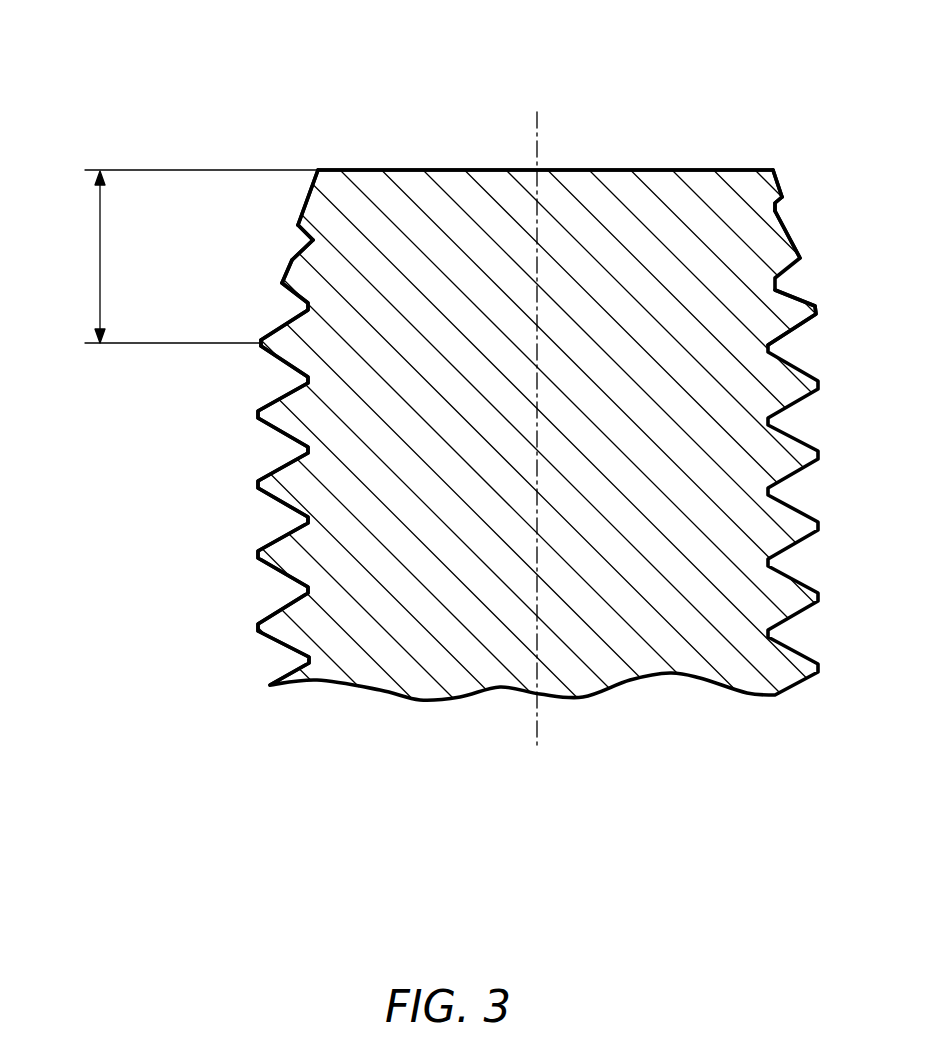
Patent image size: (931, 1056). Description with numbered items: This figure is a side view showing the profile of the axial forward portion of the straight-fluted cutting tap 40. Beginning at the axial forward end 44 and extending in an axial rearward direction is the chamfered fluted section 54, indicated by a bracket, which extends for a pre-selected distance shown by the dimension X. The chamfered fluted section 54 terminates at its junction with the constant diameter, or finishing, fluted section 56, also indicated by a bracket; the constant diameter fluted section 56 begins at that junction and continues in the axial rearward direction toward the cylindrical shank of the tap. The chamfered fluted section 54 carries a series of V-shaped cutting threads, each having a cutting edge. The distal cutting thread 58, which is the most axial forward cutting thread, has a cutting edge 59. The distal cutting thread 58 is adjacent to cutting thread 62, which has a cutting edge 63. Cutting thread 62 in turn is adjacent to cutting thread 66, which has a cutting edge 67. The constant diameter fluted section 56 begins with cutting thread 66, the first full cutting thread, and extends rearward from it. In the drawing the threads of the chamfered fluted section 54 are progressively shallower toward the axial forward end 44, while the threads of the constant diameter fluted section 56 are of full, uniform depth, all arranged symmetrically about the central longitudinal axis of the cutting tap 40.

The straight-fluted cutting tap 40 is at (212, 108).
The axial forward end 44 is at (407, 170).
The chamfered fluted section 54 is at (58, 171).
The constant diameter fluted section 56 is at (58, 347).
The distal cutting thread 58 is at (310, 198).
The cutting edge 59 is at (308, 214).
The cutting thread 62 is at (287, 265).
The cutting edge 63 is at (276, 284).
The cutting thread 66 is at (283, 344).
The cutting edge 67 is at (260, 342).